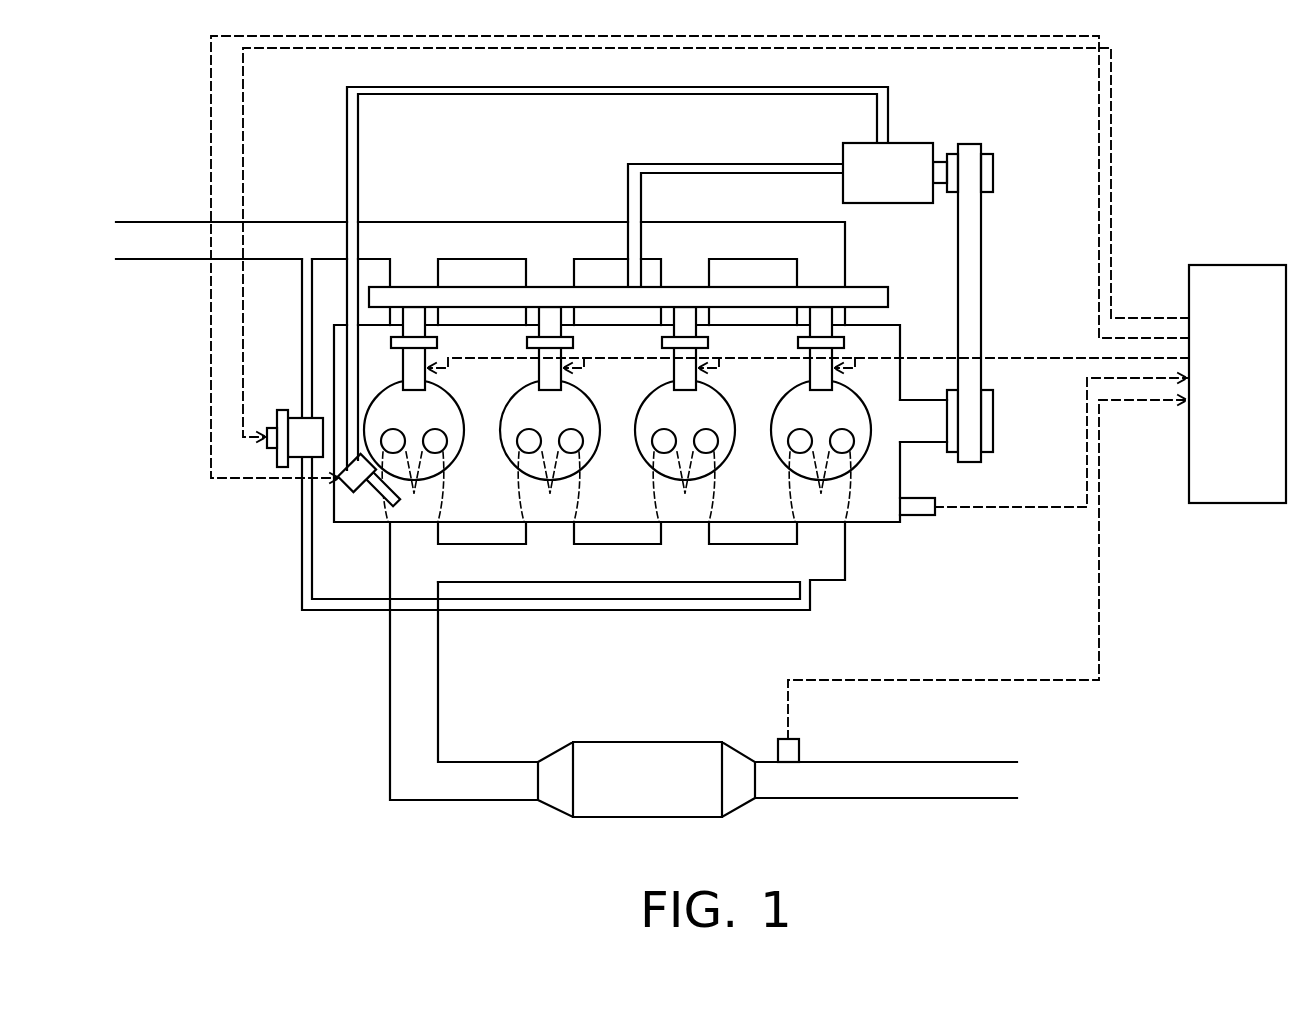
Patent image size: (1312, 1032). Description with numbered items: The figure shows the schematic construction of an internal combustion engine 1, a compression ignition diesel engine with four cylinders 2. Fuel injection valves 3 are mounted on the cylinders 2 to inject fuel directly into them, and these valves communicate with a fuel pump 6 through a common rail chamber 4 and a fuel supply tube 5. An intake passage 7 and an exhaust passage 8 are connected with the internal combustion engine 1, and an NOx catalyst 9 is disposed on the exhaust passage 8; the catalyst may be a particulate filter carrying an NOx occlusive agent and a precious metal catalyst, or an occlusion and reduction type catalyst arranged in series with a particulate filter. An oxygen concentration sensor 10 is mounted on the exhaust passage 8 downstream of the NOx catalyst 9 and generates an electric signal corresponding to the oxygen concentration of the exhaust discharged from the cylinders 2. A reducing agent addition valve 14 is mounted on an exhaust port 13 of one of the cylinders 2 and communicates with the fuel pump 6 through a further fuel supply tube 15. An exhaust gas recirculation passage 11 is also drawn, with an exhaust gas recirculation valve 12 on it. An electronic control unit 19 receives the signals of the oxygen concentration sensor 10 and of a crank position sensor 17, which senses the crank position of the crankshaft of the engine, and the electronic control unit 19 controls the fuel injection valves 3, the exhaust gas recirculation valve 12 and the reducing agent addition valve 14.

The internal combustion engine 1 is at (923, 487).
The cylinders 2 is at (454, 450).
The fuel injection valves 3 is at (402, 370).
The common rail chamber 4 is at (867, 286).
The fuel supply tube 5 is at (736, 163).
The fuel pump 6 is at (916, 142).
The intake passage 7 is at (548, 221).
The exhaust passage 8 is at (428, 676).
The NOx catalyst 9 is at (608, 748).
The oxygen concentration sensor 10 is at (800, 746).
The EGR passage 11 is at (301, 327).
The exhaust gas recirculation valve 12 is at (283, 409).
The exhaust port 13 is at (430, 499).
The reducing agent addition valve 14 is at (372, 501).
The fuel supply tube 15 is at (469, 96).
The crank position sensor 17 is at (938, 509).
The electronic control unit 19 is at (1259, 264).